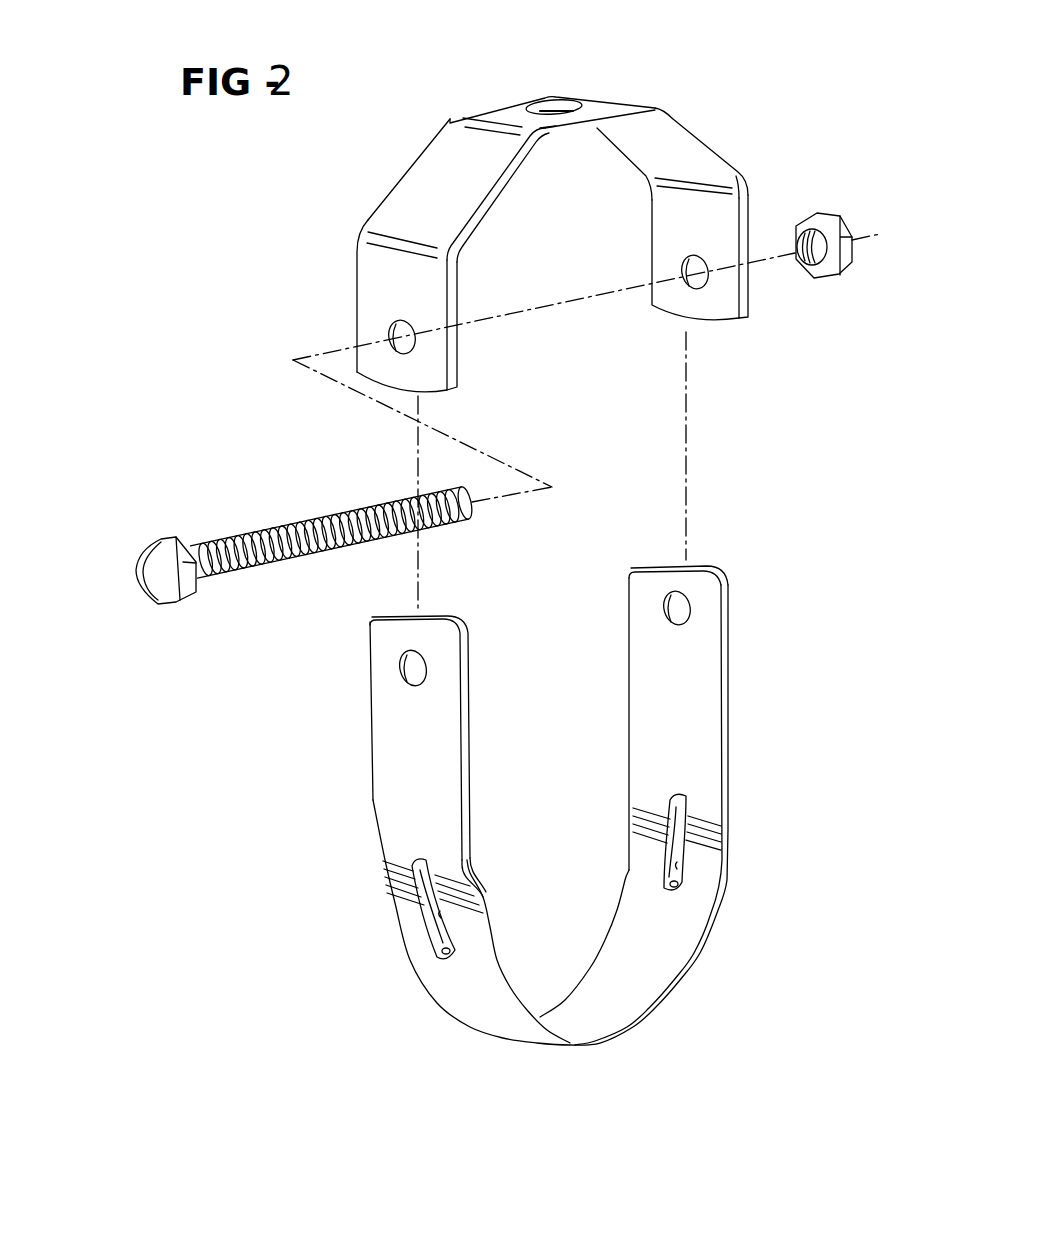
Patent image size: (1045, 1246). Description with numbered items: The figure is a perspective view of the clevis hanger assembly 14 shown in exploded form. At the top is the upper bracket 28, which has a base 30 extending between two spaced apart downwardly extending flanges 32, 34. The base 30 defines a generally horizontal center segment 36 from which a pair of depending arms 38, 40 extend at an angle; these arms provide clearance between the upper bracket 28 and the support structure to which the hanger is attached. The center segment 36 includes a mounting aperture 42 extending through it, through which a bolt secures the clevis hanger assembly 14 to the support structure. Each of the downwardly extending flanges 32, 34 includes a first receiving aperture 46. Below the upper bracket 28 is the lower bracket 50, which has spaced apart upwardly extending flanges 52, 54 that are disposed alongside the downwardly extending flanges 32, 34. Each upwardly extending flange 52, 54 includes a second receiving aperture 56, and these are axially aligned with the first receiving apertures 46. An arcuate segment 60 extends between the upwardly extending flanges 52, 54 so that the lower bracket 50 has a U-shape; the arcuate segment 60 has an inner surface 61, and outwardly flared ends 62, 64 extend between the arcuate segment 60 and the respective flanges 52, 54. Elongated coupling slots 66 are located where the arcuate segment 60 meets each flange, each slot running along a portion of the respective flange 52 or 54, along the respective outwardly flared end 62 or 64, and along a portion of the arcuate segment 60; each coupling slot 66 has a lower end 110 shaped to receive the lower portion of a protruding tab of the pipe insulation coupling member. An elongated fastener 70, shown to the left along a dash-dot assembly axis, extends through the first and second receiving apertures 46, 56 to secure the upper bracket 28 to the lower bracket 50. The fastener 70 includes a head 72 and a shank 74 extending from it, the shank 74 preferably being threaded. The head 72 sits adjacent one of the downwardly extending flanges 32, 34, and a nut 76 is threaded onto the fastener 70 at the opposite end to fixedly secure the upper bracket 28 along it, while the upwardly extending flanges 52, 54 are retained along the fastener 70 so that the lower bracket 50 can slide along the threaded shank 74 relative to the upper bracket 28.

The clevis hanger assembly 14 is at (343, 225).
The upper bracket 28 is at (450, 116).
The base 30 is at (515, 105).
The downwardly extending flange 32 is at (357, 322).
The downwardly extending flange 34 is at (750, 237).
The center segment 36 is at (573, 123).
The depending arm 38 is at (494, 183).
The depending arm 40 is at (690, 140).
The mounting aperture 42 is at (560, 106).
The first receiving aperture 46 is at (412, 342).
The lower bracket 50 is at (420, 985).
The upwardly extending flange 52 is at (372, 740).
The upwardly extending flange 54 is at (729, 690).
The second receiving aperture 56 is at (418, 665).
The arcuate segment 60 is at (584, 1050).
The inner surface 61 is at (590, 1014).
The outwardly flared end 62 is at (482, 886).
The outwardly flared end 64 is at (633, 813).
The coupling slot 66 is at (445, 921).
The elongated fastener 70 is at (290, 518).
The head 72 is at (136, 550).
The shank 74 is at (350, 510).
The nut 76 is at (847, 270).
The lower end 110 is at (447, 952).